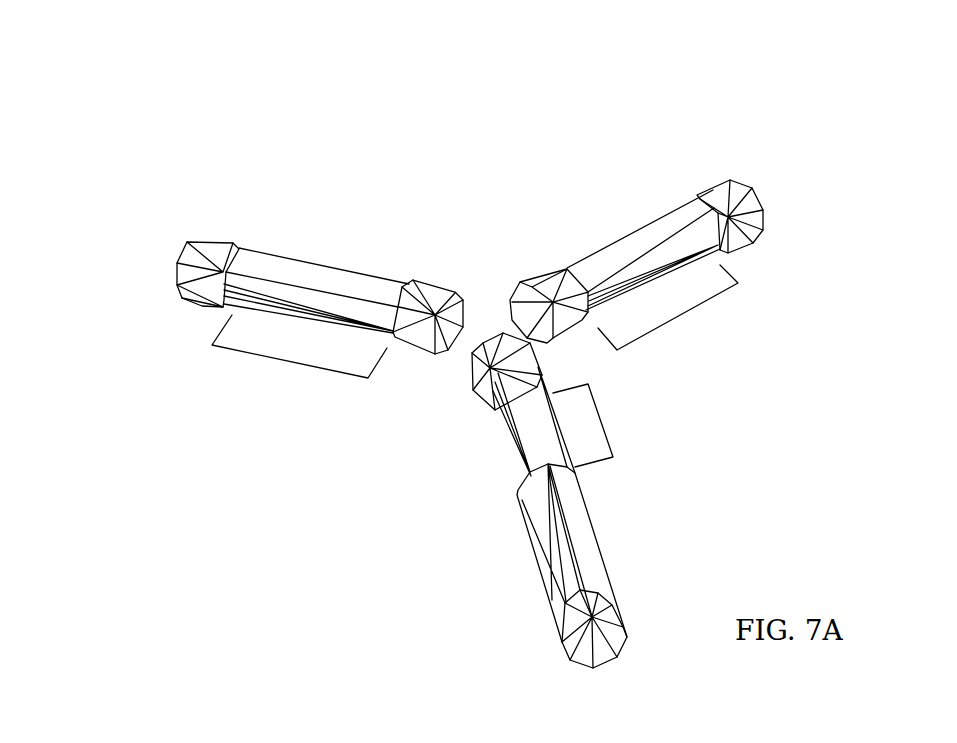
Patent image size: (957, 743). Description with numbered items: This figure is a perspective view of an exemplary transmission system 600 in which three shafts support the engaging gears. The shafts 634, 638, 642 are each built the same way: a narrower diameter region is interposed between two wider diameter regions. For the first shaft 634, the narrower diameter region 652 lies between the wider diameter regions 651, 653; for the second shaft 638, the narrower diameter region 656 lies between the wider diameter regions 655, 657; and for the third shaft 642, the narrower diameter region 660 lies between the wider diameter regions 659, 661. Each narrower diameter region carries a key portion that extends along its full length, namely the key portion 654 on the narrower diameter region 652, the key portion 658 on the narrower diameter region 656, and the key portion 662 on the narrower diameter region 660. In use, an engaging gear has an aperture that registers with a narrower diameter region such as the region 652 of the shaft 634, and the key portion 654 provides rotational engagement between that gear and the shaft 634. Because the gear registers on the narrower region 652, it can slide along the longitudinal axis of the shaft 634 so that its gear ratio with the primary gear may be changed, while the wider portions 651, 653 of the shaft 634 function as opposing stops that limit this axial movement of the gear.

The transmission system 600 is at (673, 82).
The shaft 642 is at (175, 265).
The shaft 638 is at (747, 183).
The shaft 634 is at (528, 535).
The wider diameter region 659 is at (210, 253).
The key portion 662 is at (298, 270).
The narrower diameter region 660 is at (288, 363).
The wider diameter region 661 is at (430, 298).
The wider diameter region 657 is at (552, 287).
The key portion 658 is at (638, 243).
The narrower diameter region 656 is at (680, 317).
The wider diameter region 655 is at (748, 212).
The wider diameter region 653 is at (520, 348).
The key portion 654 is at (533, 432).
The narrower diameter region 652 is at (607, 418).
The wider diameter region 651 is at (577, 547).